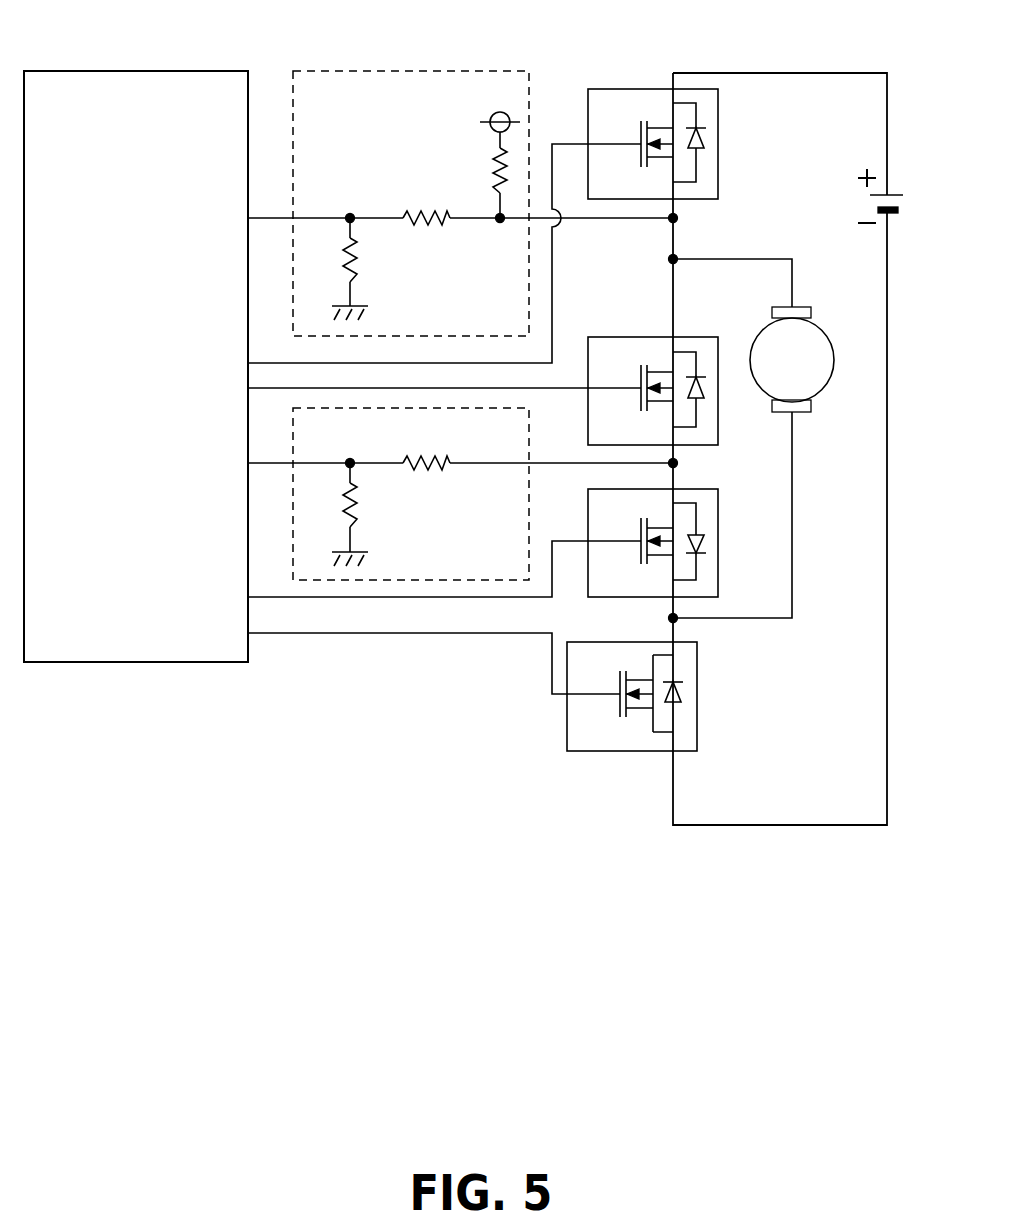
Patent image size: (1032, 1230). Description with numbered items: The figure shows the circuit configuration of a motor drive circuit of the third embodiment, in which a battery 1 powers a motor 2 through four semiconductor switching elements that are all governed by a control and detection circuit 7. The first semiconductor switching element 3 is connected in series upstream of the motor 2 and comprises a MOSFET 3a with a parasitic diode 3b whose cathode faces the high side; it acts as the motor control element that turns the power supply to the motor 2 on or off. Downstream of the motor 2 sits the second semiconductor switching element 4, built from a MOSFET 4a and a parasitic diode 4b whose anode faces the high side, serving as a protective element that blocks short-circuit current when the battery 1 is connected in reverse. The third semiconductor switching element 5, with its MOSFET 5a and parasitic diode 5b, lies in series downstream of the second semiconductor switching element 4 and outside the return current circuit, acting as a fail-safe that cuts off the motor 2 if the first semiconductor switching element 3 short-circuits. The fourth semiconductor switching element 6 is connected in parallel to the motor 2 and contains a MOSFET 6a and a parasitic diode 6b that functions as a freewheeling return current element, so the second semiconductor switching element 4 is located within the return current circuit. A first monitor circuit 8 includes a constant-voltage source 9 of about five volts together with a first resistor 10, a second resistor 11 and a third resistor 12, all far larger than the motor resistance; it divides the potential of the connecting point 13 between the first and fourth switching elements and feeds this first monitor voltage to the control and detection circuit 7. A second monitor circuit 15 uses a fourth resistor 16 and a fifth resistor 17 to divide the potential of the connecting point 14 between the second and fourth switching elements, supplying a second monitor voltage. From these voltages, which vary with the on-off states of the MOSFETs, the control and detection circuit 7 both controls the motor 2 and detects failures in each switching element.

The battery 1 is at (897, 194).
The motor 2 is at (822, 330).
The first semiconductor switching element 3 is at (671, 124).
The MOSFET 3a is at (640, 152).
The parasitic diode 3b is at (706, 140).
The second semiconductor switching element 4 is at (687, 540).
The MOSFET 4a is at (640, 549).
The parasitic diode 4b is at (730, 556).
The third semiconductor switching element 5 is at (658, 732).
The MOSFET 5a is at (620, 702).
The parasitic diode 5b is at (685, 694).
The fourth semiconductor switching element 6 is at (670, 376).
The MOSFET 6a is at (640, 396).
The parasitic diode 6b is at (703, 403).
The control and detection circuit 7 is at (178, 70).
The monitor circuit 8 is at (411, 173).
The constant-voltage source 9 is at (491, 116).
The first resistor 10 is at (498, 151).
The second resistor 11 is at (440, 223).
The third resistor 12 is at (355, 278).
The connecting point 13 is at (678, 218).
The connecting point 14 is at (678, 463).
The monitor circuit 15 is at (436, 486).
The fourth resistor 16 is at (440, 468).
The fifth resistor 17 is at (355, 523).